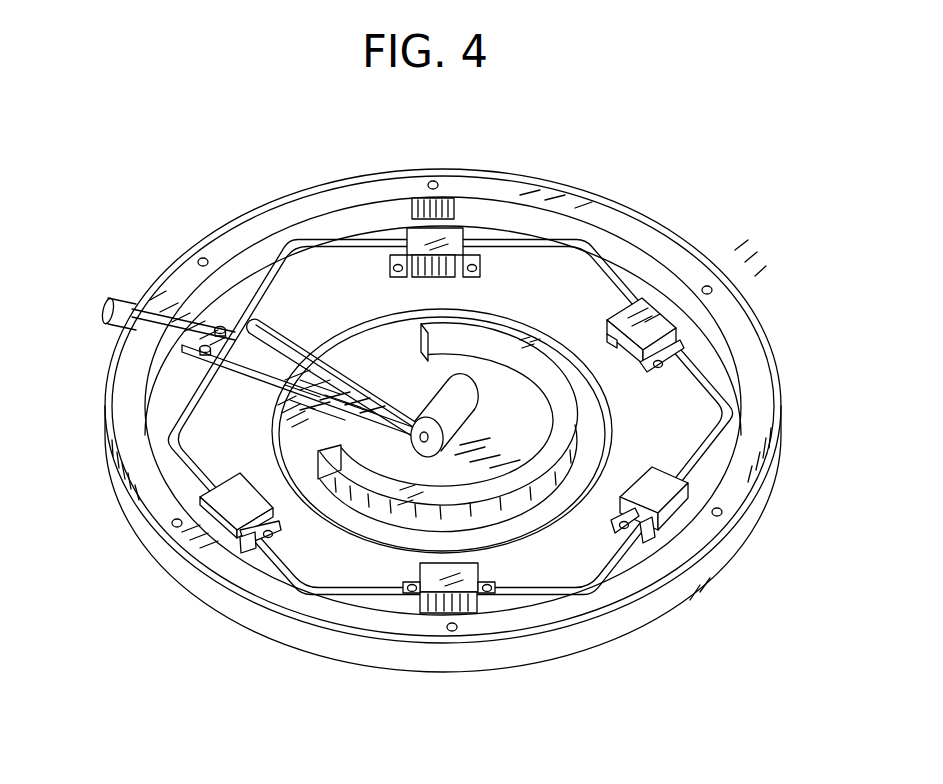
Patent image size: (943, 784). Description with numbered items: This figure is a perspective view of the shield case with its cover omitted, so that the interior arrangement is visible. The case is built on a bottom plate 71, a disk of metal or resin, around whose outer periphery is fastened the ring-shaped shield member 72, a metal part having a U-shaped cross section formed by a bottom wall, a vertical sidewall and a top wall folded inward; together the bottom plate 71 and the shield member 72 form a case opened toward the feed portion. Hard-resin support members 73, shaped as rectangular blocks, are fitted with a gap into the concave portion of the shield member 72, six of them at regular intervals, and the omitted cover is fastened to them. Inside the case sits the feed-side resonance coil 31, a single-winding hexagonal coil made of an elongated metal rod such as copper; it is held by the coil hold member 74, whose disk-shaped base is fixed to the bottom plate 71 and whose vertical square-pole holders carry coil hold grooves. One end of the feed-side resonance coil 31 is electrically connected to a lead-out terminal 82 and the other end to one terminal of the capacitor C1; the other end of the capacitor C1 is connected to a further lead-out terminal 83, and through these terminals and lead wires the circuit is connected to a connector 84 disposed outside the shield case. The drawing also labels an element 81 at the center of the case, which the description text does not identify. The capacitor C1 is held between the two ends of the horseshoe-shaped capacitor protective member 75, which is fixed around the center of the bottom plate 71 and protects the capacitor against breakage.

The feed-side resonance coil 31 is at (187, 408).
The bottom plate 71 is at (383, 343).
The shield member 72 is at (408, 190).
The support member 73 is at (454, 210).
The coil hold member 74 is at (652, 327).
The capacitor protective member 75 is at (562, 400).
The roller 81 is at (425, 447).
The lead-out terminal 82 is at (221, 327).
The lead-out terminal 83 is at (200, 351).
The connector 84 is at (104, 298).
The capacitor C1 is at (443, 410).